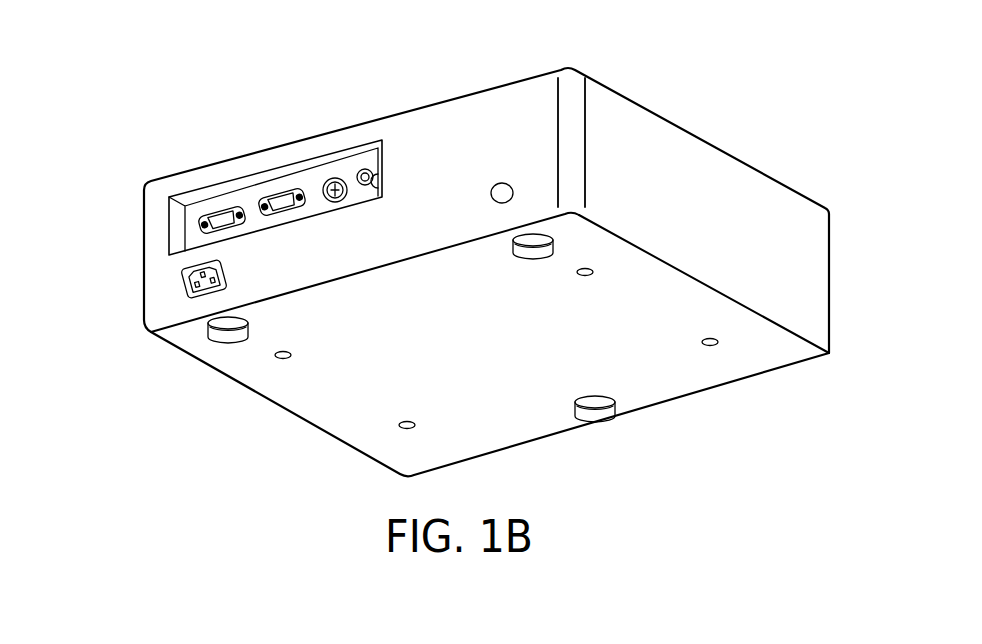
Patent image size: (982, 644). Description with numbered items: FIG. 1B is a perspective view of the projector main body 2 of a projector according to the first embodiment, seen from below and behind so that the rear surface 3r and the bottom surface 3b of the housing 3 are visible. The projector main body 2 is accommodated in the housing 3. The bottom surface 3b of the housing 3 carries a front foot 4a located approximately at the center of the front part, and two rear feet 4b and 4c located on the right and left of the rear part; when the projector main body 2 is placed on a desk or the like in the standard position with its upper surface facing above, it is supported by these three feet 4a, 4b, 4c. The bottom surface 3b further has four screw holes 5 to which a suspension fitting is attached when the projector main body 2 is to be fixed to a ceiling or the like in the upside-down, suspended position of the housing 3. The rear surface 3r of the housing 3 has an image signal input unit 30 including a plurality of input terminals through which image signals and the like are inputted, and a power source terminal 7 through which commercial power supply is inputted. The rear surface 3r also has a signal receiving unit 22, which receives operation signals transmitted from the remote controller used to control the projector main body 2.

The projector main body 2 is at (668, 92).
The housing 3 is at (738, 177).
The rear surface 3r is at (450, 123).
The bottom surface 3b is at (723, 375).
The image signal input unit 30 is at (248, 197).
The power source terminal 7 is at (187, 282).
The signal receiving unit 22 is at (495, 196).
The front foot 4a is at (595, 421).
The rear foot 4b is at (533, 258).
The rear foot 4c is at (229, 343).
The screw holes 5 is at (406, 420).